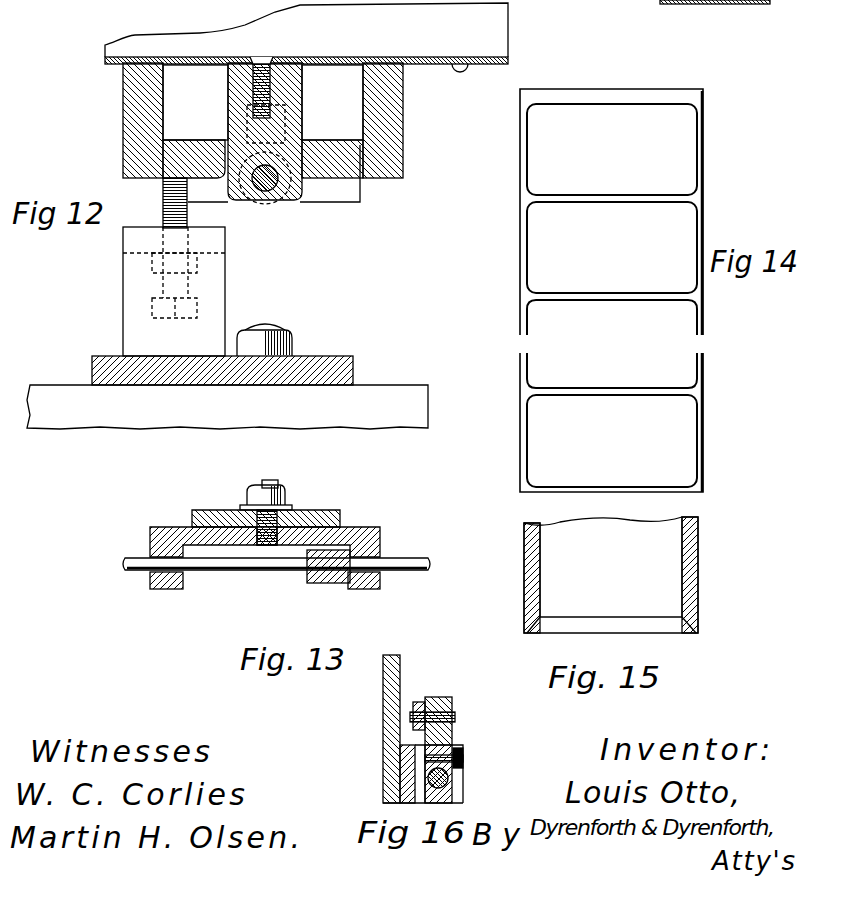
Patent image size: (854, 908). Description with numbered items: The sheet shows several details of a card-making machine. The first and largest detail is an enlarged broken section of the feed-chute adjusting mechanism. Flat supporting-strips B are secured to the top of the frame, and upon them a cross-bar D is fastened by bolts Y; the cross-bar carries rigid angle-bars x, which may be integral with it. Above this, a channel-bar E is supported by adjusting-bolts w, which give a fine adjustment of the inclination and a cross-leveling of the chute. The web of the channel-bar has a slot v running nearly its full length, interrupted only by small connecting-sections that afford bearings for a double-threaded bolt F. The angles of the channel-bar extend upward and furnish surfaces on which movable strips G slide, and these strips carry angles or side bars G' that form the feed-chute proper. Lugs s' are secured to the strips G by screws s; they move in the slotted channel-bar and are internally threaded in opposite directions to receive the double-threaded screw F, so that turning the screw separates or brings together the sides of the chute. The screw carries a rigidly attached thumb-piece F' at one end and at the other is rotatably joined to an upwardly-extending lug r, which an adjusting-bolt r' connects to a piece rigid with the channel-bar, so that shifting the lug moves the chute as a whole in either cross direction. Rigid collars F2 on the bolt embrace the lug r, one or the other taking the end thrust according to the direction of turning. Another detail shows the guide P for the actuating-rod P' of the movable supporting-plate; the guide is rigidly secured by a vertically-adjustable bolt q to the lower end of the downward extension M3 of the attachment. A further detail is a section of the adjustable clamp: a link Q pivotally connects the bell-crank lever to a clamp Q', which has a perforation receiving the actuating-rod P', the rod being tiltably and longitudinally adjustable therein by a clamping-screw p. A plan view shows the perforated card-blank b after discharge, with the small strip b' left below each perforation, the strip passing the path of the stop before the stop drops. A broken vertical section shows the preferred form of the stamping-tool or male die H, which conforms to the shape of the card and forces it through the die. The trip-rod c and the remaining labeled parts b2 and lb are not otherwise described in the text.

In FIG. 12, the angles or side bars G' is at (306, 30).
In FIG. 12, the movable strips G is at (306, 78).
In FIG. 12, the channel-bar E is at (403, 150).
In FIG. 12, the adjusting-bolt r' is at (195, 102).
In FIG. 12, the lugs s' is at (332, 102).
In FIG. 12, the slot v is at (222, 140).
In FIG. 12, the upwardly-extending lug r is at (275, 155).
In FIG. 12, the double-threaded bolt F is at (265, 131).
In FIG. 12, the screws s is at (275, 73).
In FIG. 12, the thumb-piece F' is at (265, 199).
In FIG. 12, the rigid collars F2 is at (295, 205).
In FIG. 12, the trip-rod c is at (340, 193).
In FIG. 12, the adjusting-bolts w is at (163, 207).
In FIG. 12, the angle-bars x is at (225, 282).
In FIG. 12, the bolts Y is at (292, 342).
In FIG. 12, the cross-bar D is at (233, 368).
In FIG. 12, the supporting-strips B is at (227, 394).
In FIG. 13, the downward extension M3 is at (192, 510).
In FIG. 16, the downward extension M3 is at (383, 717).
In FIG. 13, the vertically-adjustable bolt q is at (262, 478).
In FIG. 13, the guide P is at (277, 547).
In FIG. 16, the guide P is at (401, 774).
In FIG. 13, the actuating-rod P' is at (280, 551).
In FIG. 16, the actuating-rod P' is at (464, 774).
In FIG. 13, the clamp Q' is at (300, 580).
In FIG. 16, the clamp Q' is at (480, 726).
In FIG. 13, the bearing lb is at (326, 583).
In FIG. 14, the card-blank b is at (624, 290).
In FIG. 14, the partition b2 is at (588, 100).
In FIG. 14, the small strip b' is at (612, 295).
In FIG. 15, the stamping-tool or male die H is at (611, 575).
In FIG. 16, the link Q is at (446, 707).
In FIG. 16, the clamping-screw p is at (463, 757).